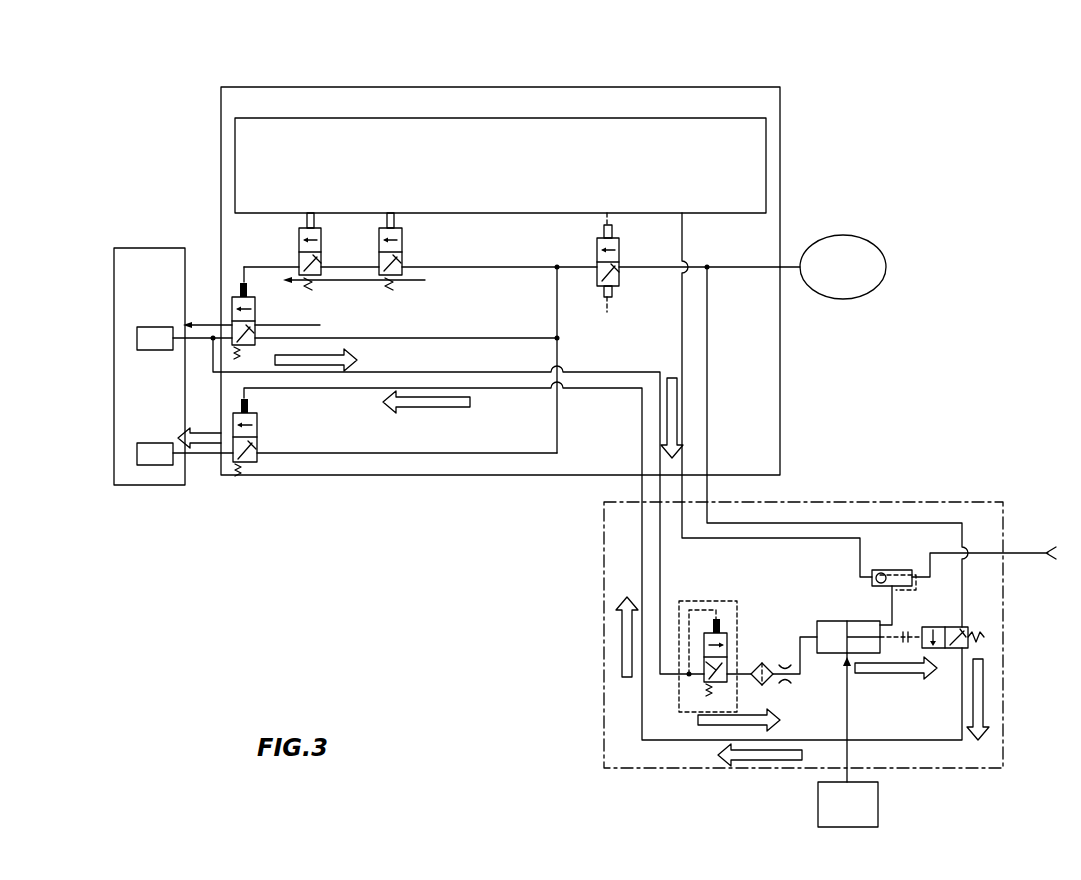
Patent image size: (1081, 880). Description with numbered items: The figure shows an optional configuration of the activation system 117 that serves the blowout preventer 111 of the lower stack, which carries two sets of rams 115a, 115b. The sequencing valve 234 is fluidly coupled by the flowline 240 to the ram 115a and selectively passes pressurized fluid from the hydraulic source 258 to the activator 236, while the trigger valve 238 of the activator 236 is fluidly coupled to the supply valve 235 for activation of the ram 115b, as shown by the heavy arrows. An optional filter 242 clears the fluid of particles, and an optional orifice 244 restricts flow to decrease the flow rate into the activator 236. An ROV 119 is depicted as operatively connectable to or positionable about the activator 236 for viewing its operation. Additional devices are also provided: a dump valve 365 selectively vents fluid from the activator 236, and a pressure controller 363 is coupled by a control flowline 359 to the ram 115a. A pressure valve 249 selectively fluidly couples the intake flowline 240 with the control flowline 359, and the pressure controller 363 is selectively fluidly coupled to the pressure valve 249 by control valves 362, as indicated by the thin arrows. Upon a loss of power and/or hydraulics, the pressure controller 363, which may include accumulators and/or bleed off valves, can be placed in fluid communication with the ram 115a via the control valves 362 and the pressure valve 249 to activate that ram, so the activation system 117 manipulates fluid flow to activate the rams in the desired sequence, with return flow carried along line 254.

The activation system 117 is at (872, 150).
The pressure controller 363 is at (519, 180).
The blowout preventer 111 is at (168, 284).
The ram 115a is at (137, 335).
The ram 115b is at (137, 447).
The hydraulic source 258 is at (860, 278).
The control valves 362 is at (297, 240).
The control flowline 359 is at (250, 263).
The pressure valve 249 is at (257, 324).
The flowline 240 is at (178, 336).
The return line 254 is at (207, 457).
The supply valve 235 is at (257, 461).
The sequencing valve 234 is at (705, 600).
The filter 242 is at (762, 662).
The orifice 244 is at (788, 683).
The activator 236 is at (837, 620).
The ROV 119 is at (865, 816).
The dump valve 365 is at (884, 570).
The trigger valve 238 is at (968, 630).